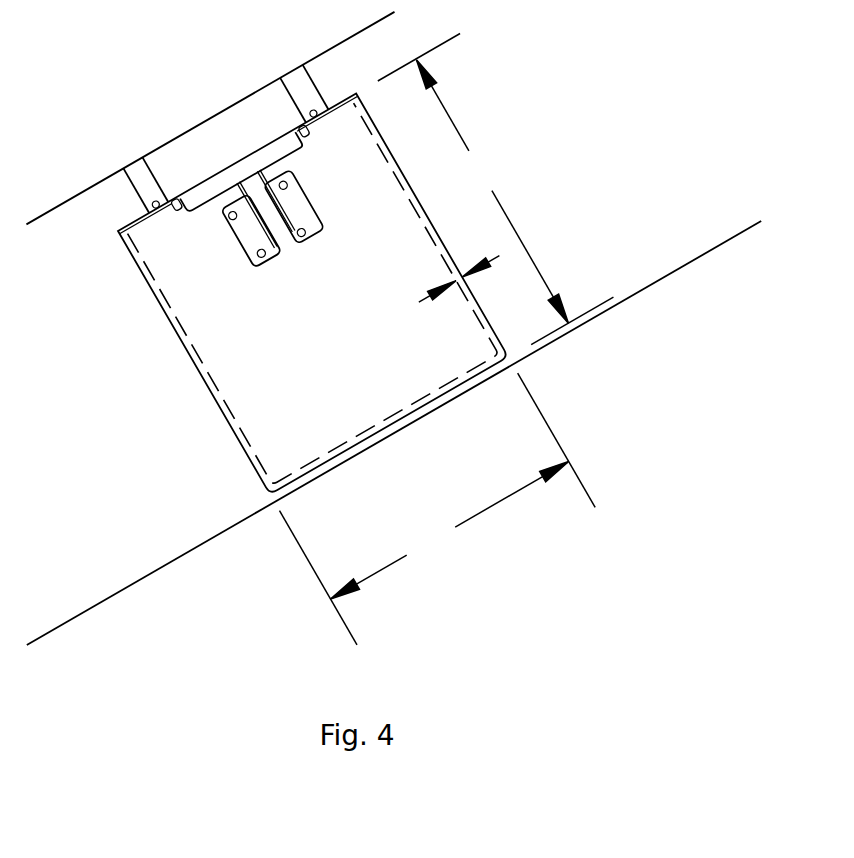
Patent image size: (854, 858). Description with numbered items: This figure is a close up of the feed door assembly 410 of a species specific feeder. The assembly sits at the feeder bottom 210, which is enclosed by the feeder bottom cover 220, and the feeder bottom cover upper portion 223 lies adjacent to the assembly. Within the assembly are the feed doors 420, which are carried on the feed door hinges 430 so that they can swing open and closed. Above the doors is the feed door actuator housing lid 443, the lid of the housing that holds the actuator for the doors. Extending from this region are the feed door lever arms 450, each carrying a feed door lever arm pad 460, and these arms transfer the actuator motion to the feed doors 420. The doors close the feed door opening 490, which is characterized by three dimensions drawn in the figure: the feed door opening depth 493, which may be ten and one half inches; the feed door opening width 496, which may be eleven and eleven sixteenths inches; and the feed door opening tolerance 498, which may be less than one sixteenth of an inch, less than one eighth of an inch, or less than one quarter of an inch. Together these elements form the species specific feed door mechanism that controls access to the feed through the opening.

The feeder bottom 210 is at (139, 458).
The feeder bottom cover 220 is at (73, 496).
The feeder bottom cover upper portion 223 is at (106, 408).
The feed door assembly 410 is at (236, 316).
The feed doors 420 is at (331, 346).
The feed door hinges 430 is at (197, 219).
The feed door actuator housing lid 443 is at (201, 162).
The feed door lever arms 450 is at (284, 206).
The feed door lever arm pads 460 is at (288, 239).
The feed door opening 490 is at (407, 182).
The feed door opening depth 493 is at (496, 189).
The feed door opening width 496 is at (438, 509).
The feed door opening tolerance 498 is at (462, 281).